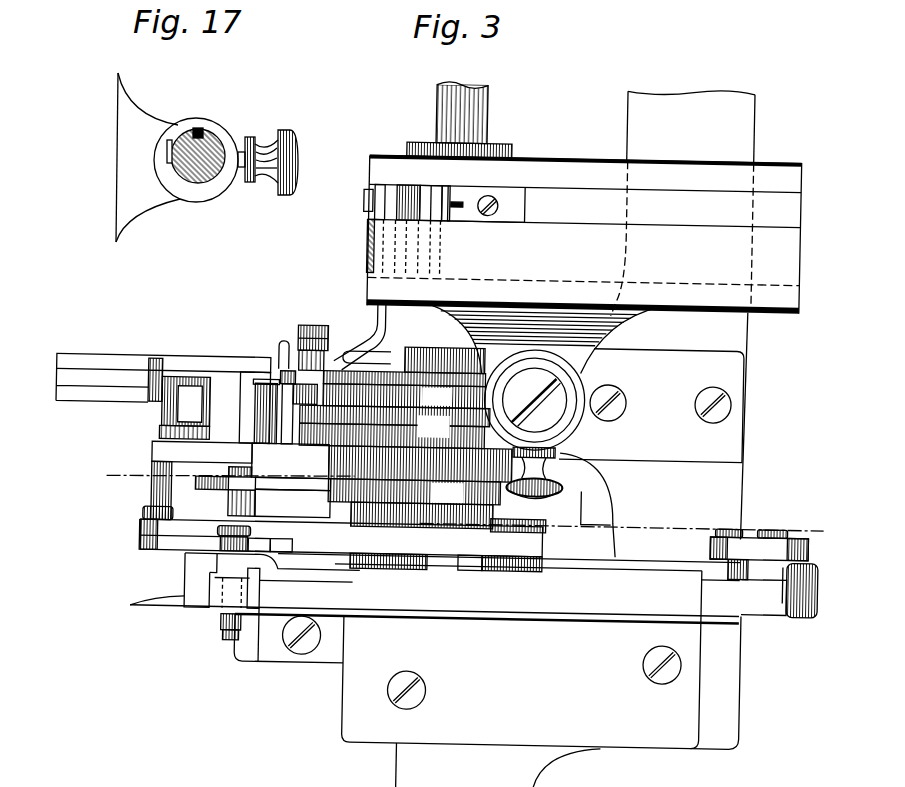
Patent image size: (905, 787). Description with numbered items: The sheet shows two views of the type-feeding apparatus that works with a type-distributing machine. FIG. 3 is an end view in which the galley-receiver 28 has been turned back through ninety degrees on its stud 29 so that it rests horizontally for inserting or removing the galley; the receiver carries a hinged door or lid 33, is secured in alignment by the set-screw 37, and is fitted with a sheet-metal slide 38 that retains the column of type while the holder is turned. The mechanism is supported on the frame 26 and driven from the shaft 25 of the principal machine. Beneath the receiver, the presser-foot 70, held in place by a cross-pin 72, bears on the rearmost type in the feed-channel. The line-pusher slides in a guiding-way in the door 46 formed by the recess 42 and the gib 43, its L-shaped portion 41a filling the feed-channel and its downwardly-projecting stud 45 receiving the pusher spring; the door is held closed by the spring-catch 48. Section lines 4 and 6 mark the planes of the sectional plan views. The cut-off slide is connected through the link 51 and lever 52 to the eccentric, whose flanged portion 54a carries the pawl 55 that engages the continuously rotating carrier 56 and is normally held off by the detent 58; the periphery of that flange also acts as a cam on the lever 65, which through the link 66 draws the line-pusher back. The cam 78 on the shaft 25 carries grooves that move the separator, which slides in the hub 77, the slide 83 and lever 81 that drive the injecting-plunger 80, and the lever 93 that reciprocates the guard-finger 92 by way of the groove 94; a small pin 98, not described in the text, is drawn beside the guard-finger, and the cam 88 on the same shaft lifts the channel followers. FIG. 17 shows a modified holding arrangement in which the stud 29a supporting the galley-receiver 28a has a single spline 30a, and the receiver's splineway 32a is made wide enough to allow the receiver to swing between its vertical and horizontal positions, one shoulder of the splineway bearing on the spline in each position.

In FIG. 3, the section line 4 is at (219, 478).
In FIG. 3, the section line 6 is at (623, 566).
In FIG. 3, the shaft 25 is at (467, 112).
In FIG. 3, the frame 26 is at (575, 436).
In FIG. 3, the galley-receiver 28 is at (584, 234).
In FIG. 3, the stud 29 is at (542, 378).
In FIG. 3, the door or lid 33 is at (584, 234).
In FIG. 3, the set-screw 37 is at (551, 493).
In FIG. 3, the slide 38 is at (365, 245).
In FIG. 3, the L-shaped portion of the line-pusher 41a is at (309, 580).
In FIG. 3, the recess 42 is at (223, 584).
In FIG. 3, the gib 43 is at (200, 565).
In FIG. 3, the downwardly-projecting stud 45 is at (233, 647).
In FIG. 3, the door 46 is at (205, 589).
In FIG. 3, the spring-catch 48 is at (156, 617).
In FIG. 3, the link 51 is at (653, 556).
In FIG. 3, the lever 52 is at (754, 530).
In FIG. 3, the flanged portion of the eccentric 54a is at (550, 538).
In FIG. 3, the pawl 55 is at (333, 492).
In FIG. 3, the carrier 56 is at (420, 487).
In FIG. 3, the detent 58 is at (300, 486).
In FIG. 3, the lever 65 is at (146, 537).
In FIG. 3, the link 66 is at (147, 552).
In FIG. 3, the presser-foot 70 is at (361, 202).
In FIG. 3, the cross-pin 72 is at (453, 208).
In FIG. 3, the hub 77 is at (358, 346).
In FIG. 3, the cam 78 is at (394, 427).
In FIG. 3, the injecting-plunger 80 is at (223, 368).
In FIG. 3, the lever 81 is at (186, 417).
In FIG. 3, the slide 83 is at (203, 481).
In FIG. 3, the cam 88 is at (432, 143).
In FIG. 3, the guard-finger 92 is at (315, 327).
In FIG. 3, the lever 93 is at (286, 388).
In FIG. 3, the groove 94 is at (404, 377).
In FIG. 3, the pin 98 is at (284, 343).
In FIG. 17, the galley-receiver 28a is at (153, 195).
In FIG. 17, the stud 29a is at (220, 141).
In FIG. 17, the single spline 30a is at (204, 130).
In FIG. 17, the splineway 32a is at (170, 145).